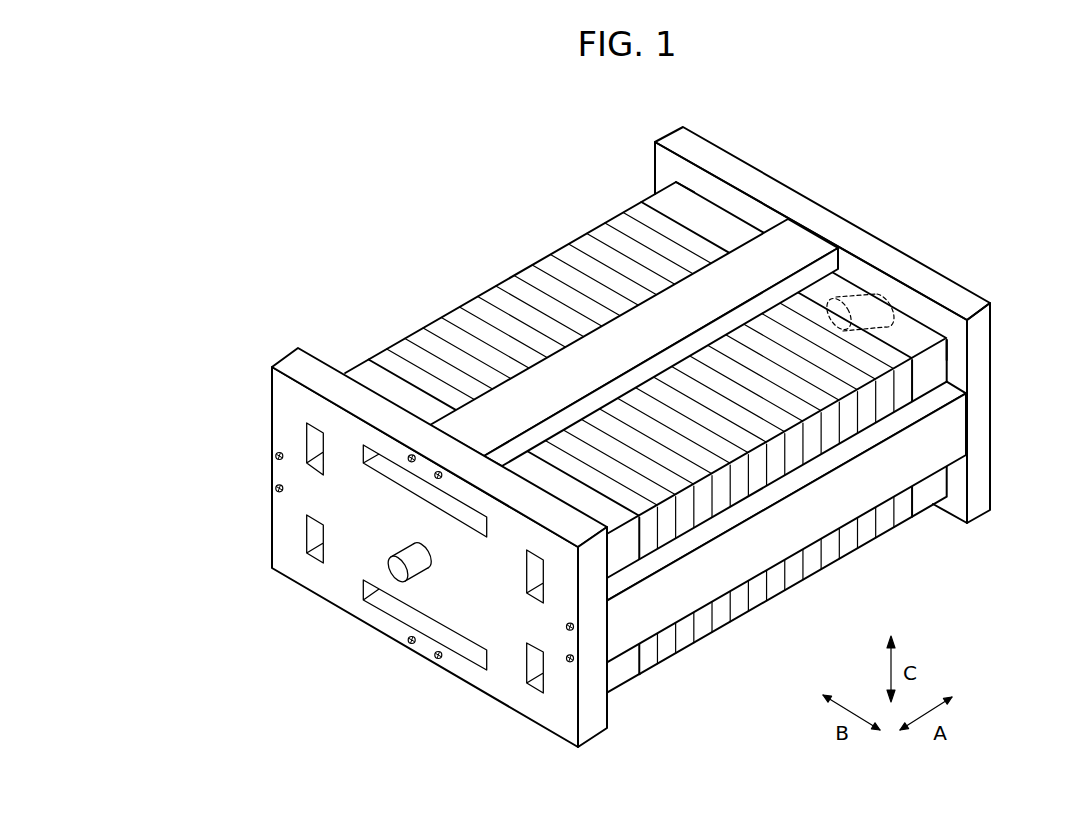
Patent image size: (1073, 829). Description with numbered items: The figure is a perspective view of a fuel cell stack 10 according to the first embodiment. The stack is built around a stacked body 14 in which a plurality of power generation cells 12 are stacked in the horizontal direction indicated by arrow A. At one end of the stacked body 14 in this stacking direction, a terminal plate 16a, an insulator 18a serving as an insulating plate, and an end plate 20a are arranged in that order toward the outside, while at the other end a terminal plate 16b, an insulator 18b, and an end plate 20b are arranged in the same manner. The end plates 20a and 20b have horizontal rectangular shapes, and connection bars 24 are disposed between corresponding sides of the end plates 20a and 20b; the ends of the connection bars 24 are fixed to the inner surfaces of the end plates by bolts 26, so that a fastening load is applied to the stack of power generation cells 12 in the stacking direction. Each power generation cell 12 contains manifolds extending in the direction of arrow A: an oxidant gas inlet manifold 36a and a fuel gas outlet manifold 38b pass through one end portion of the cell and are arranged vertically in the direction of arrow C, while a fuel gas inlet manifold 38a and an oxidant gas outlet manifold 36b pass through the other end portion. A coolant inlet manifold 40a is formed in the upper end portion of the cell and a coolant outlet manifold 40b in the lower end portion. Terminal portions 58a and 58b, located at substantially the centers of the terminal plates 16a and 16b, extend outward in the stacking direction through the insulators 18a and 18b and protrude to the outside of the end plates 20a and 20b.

The fuel cell stack 10 is at (684, 86).
The power generation cell 12 is at (470, 300).
The stacked body 14 is at (402, 270).
The terminal plate 16a is at (620, 558).
The terminal plate 16b is at (707, 226).
The insulator 18a is at (625, 670).
The insulator 18b is at (672, 190).
The end plate 20a is at (298, 347).
The end plate 20b is at (968, 294).
The connection bar 24 is at (797, 242).
The bolt 26 is at (276, 488).
The oxidant gas inlet manifold 36a is at (308, 440).
The oxidant gas outlet manifold 36b is at (533, 655).
The fuel gas inlet manifold 38a is at (533, 570).
The fuel gas outlet manifold 38b is at (308, 540).
The coolant inlet manifold 40a is at (418, 488).
The coolant outlet manifold 40b is at (398, 610).
The terminal portion 58a is at (391, 565).
The terminal portion 58b is at (902, 315).